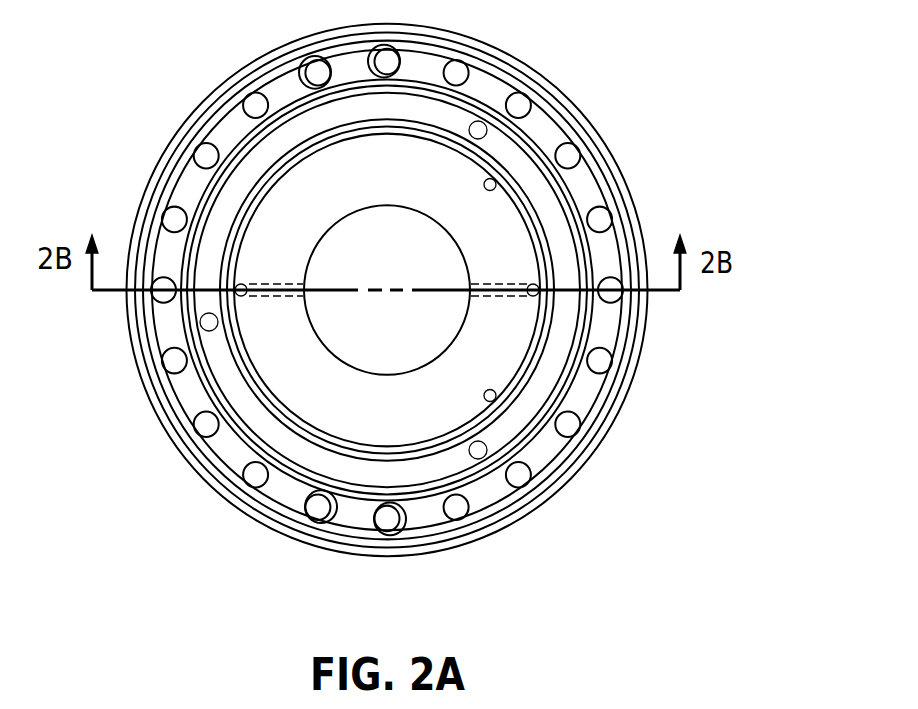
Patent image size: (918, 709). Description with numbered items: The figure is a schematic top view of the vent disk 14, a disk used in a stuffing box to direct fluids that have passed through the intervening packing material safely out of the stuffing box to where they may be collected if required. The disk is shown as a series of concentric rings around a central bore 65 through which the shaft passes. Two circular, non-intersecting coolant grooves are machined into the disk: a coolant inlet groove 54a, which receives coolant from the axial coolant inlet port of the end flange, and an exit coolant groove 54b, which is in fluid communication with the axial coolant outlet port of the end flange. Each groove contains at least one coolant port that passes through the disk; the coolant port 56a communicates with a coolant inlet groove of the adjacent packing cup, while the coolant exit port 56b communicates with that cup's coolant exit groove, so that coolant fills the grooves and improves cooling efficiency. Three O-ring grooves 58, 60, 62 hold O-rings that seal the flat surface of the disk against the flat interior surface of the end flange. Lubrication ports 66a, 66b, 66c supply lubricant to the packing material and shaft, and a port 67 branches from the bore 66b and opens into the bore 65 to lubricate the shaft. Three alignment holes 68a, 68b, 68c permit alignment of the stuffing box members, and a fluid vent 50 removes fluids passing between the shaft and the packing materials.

The vent disk 14 is at (483, 290).
The fluid vent 50 is at (196, 195).
The coolant inlet groove 54a is at (423, 290).
The exit coolant groove 54b is at (360, 270).
The coolant port 56a is at (649, 199).
The coolant exit port 56b is at (117, 195).
The O-ring groove 58 is at (429, 289).
The O-ring groove 60 is at (455, 290).
The O-ring groove 62 is at (358, 360).
The bore 65 is at (401, 263).
The lubrication port 66a is at (576, 114).
The lubrication port 66b is at (618, 210).
The lubrication port 66c is at (576, 478).
The port 67 is at (583, 194).
The alignment hole 68a is at (524, 83).
The alignment hole 68b is at (545, 533).
The alignment hole 68c is at (150, 405).